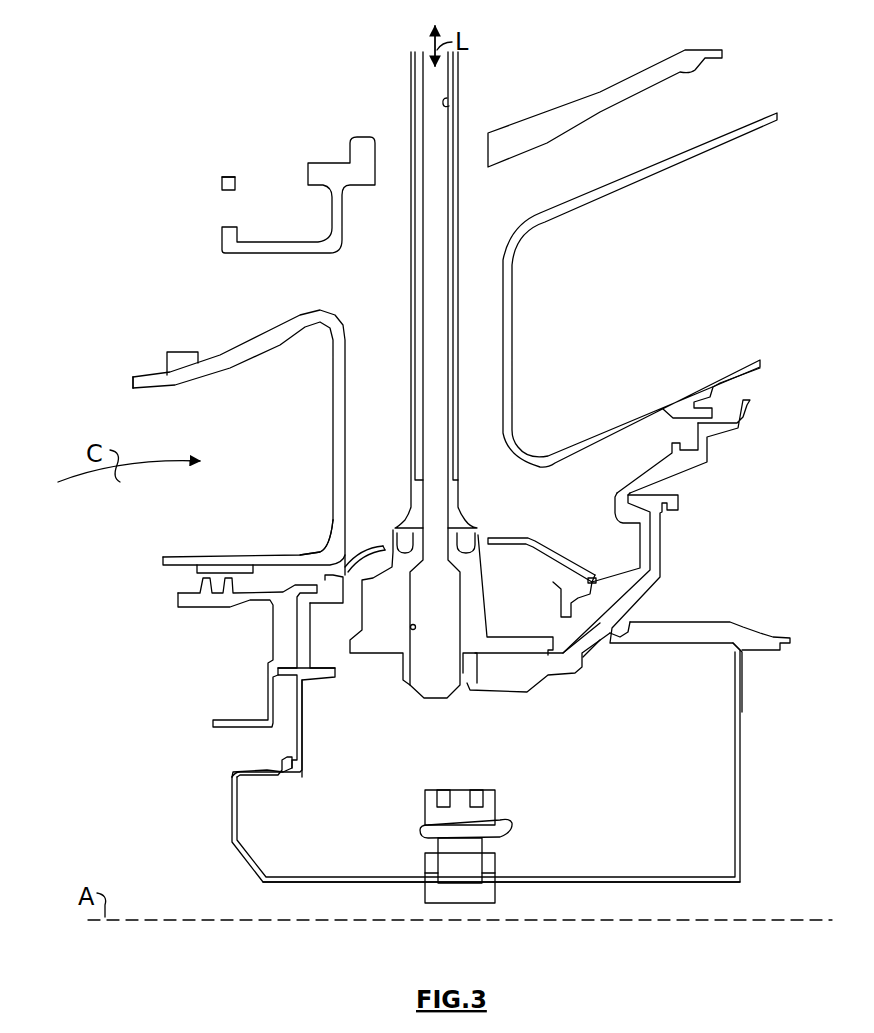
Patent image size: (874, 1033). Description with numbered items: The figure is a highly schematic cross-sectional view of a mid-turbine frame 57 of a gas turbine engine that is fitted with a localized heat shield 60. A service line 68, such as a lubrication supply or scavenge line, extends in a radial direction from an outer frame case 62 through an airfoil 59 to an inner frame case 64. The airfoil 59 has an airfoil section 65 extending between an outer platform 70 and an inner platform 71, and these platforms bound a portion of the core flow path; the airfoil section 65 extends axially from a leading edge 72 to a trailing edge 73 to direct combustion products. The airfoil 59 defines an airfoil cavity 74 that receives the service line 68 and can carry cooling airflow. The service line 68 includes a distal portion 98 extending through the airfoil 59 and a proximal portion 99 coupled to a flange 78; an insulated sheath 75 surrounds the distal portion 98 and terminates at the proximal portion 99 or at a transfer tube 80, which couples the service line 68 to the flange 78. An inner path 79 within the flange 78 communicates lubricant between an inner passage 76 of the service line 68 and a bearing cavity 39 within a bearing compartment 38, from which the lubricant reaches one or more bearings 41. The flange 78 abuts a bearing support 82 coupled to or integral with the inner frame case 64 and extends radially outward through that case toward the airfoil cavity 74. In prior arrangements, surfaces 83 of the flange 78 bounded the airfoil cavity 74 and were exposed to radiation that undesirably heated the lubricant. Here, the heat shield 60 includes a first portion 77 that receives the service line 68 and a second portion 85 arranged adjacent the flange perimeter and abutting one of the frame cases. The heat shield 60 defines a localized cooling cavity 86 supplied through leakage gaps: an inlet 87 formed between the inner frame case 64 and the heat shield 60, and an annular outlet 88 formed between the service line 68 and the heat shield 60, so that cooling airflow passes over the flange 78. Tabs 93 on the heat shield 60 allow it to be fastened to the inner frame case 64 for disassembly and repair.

The bearing compartment 38 is at (228, 774).
The bearing cavity 39 is at (501, 814).
The bearing 41 is at (490, 842).
The mid-turbine frame 57 is at (172, 168).
The airfoil 59 is at (92, 385).
The localized heat shield 60 is at (358, 544).
The outer frame case 62 is at (670, 68).
The inner frame case 64 is at (750, 417).
The airfoil section 65 is at (334, 418).
The service line 68 is at (460, 215).
The outer platform 70 is at (175, 387).
The inner platform 71 is at (188, 556).
The leading edge 72 is at (333, 467).
The trailing edge 73 is at (505, 393).
The airfoil cavity 74 is at (411, 375).
The insulated sheath 75 is at (458, 240).
The inner passage 76 is at (447, 104).
The first portion 77 is at (542, 540).
The flange 78 is at (487, 580).
The inner path 79 is at (410, 628).
The transfer tube 80 is at (467, 517).
The bearing support 82 is at (663, 555).
The surfaces 83 is at (508, 637).
The second portion 85 is at (568, 580).
The localized cooling cavity 86 is at (370, 565).
The inlet 87 is at (345, 562).
The outlet 88 is at (481, 537).
The tab 93 is at (591, 578).
The distal portion 98 is at (411, 291).
The proximal portion 99 is at (460, 480).